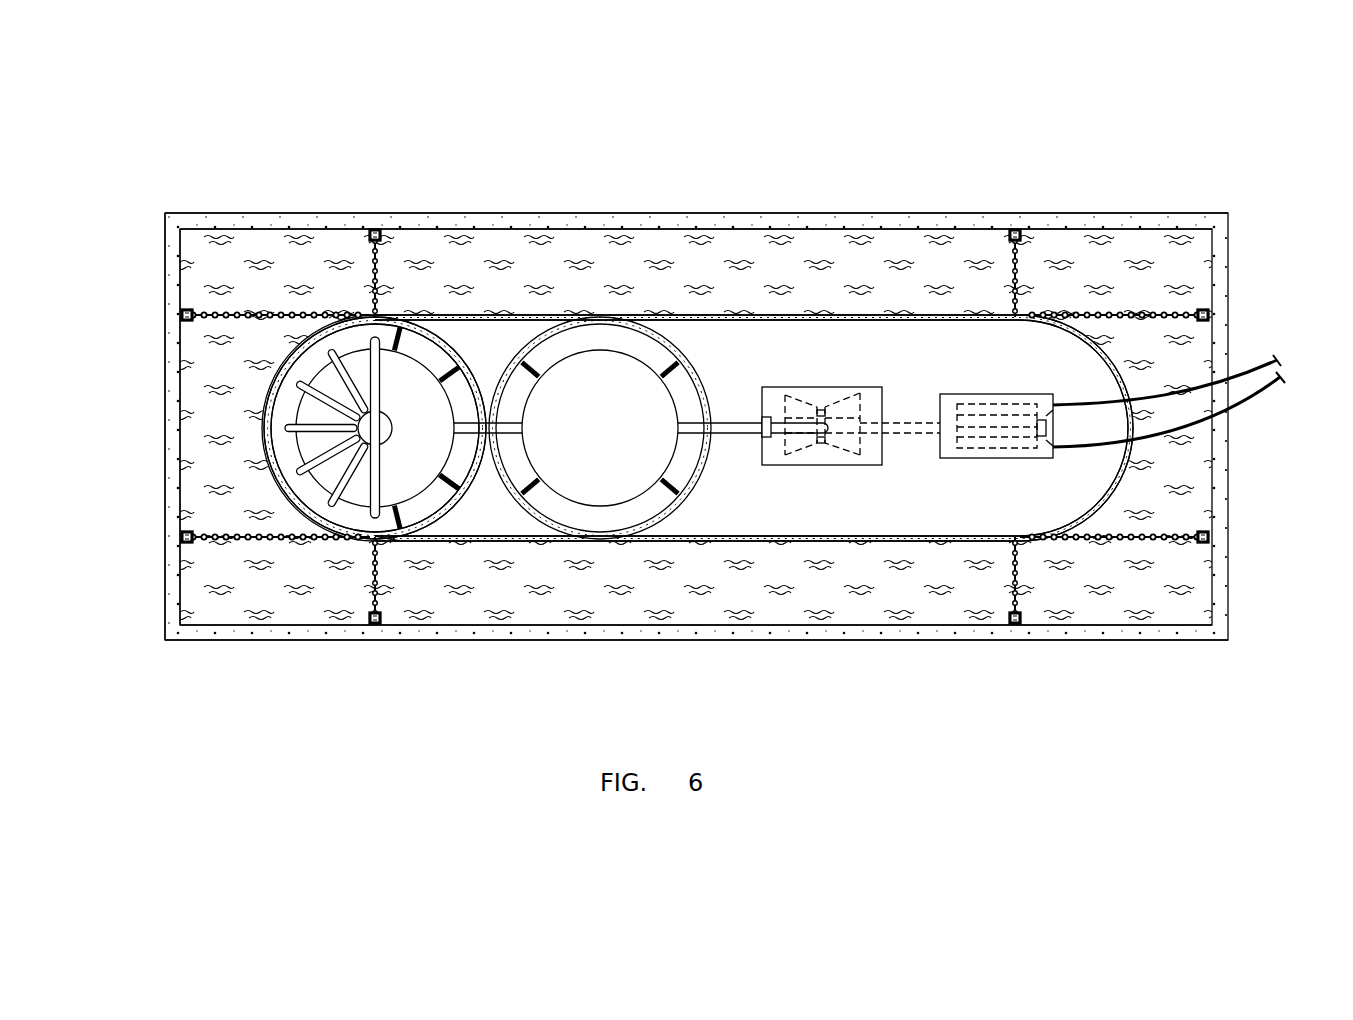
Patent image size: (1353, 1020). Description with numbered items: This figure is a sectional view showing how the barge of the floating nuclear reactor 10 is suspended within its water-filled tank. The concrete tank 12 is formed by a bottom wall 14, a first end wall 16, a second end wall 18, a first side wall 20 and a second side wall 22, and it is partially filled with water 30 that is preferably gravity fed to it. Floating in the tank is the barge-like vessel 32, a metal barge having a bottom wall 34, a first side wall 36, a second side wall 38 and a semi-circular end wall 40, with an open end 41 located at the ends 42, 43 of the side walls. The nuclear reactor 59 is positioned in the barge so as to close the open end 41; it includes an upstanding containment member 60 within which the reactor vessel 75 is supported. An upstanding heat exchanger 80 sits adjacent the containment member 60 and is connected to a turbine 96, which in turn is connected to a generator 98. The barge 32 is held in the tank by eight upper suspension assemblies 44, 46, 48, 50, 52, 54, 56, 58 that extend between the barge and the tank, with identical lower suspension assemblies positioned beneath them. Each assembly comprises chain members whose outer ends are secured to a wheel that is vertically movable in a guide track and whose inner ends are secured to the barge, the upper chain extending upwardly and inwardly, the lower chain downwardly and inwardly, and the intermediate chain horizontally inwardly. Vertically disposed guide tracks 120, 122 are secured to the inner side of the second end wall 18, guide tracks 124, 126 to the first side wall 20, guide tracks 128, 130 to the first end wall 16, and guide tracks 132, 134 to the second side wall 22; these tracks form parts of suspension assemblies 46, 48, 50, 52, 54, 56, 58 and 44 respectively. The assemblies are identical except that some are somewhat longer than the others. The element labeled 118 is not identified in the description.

The floating nuclear reactor 10 is at (740, 340).
The concrete tank 12 is at (1178, 205).
The bottom wall 14 is at (770, 598).
The first end wall 16 is at (158, 485).
The second end wall 18 is at (1228, 350).
The first side wall 20 is at (663, 640).
The second side wall 22 is at (640, 213).
The water 30 is at (873, 597).
The barge-like vessel 32 is at (1130, 478).
The bottom wall 34 is at (917, 520).
The first side wall 36 is at (928, 543).
The second side wall 38 is at (950, 313).
The semi-circular end wall 40 is at (1117, 368).
The open end 41 is at (445, 525).
The end of side wall 42 is at (388, 540).
The end of side wall 43 is at (378, 313).
The upper suspension assembly 44 is at (1027, 257).
The upper suspension assembly 46 is at (1167, 310).
The upper suspension assembly 48 is at (1183, 553).
The upper suspension assembly 50 is at (1037, 590).
The upper suspension assembly 52 is at (370, 600).
The upper suspension assembly 54 is at (214, 540).
The upper suspension assembly 56 is at (222, 323).
The upper suspension assembly 58 is at (370, 260).
The nuclear reactor 59 is at (270, 410).
The containment member 60 is at (292, 335).
The reactor vessel 75 is at (462, 470).
The heat exchanger 80 is at (665, 518).
The turbine 96 is at (845, 470).
The generator 98 is at (1050, 470).
The cable connectors 118 is at (1277, 363).
The guide track 120 is at (1212, 305).
The guide track 122 is at (1205, 545).
The guide track 124 is at (1010, 620).
The guide track 126 is at (380, 622).
The guide track 128 is at (187, 542).
The guide track 130 is at (187, 310).
The guide track 132 is at (378, 228).
The guide track 134 is at (1010, 235).